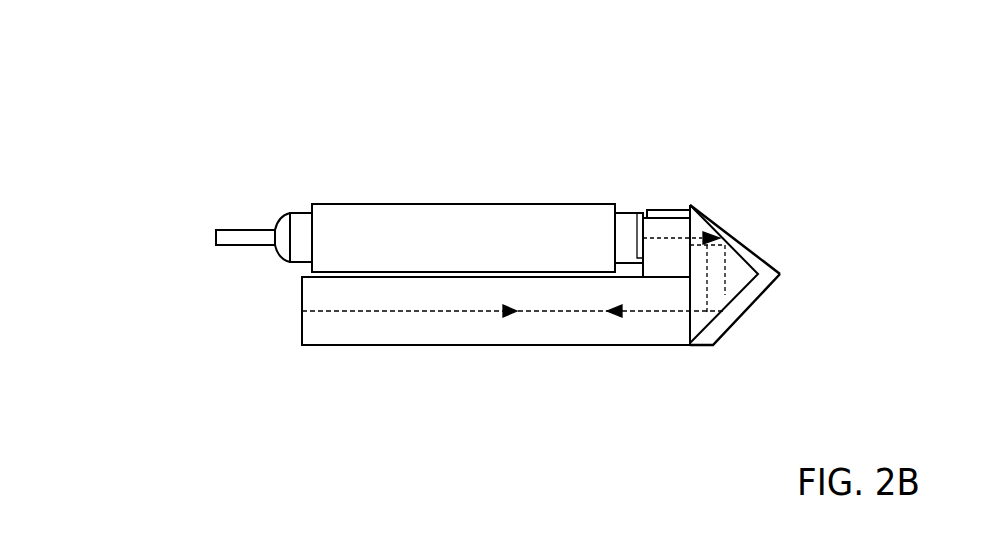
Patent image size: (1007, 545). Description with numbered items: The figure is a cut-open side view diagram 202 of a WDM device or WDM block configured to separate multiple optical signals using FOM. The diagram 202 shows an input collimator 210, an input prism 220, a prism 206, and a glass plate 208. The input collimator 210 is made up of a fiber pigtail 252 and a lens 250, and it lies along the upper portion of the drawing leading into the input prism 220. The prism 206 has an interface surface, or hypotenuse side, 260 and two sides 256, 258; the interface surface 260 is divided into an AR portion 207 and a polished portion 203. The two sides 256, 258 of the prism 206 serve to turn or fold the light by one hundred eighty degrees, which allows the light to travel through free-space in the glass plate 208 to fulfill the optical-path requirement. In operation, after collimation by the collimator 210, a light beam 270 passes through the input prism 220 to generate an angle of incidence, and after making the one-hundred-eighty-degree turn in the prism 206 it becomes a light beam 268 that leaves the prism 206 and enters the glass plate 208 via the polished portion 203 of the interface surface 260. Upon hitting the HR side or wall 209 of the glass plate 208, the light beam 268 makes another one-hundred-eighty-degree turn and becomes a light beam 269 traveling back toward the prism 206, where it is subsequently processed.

The side view diagram 202 is at (176, 45).
The fiber pigtail 252 is at (290, 214).
The input collimator 210 is at (496, 252).
The lens 250 is at (632, 212).
The light beam 270 is at (648, 212).
The input prism 220 is at (658, 213).
The interface surface 260 is at (683, 210).
The AR portion 207 is at (748, 243).
The side 256 is at (766, 244).
The side 258 is at (767, 290).
The prism 206 is at (755, 321).
The glass plate 208 is at (393, 345).
The HR side or wall 209 is at (300, 328).
The light beam 269 is at (527, 320).
The light beam 268 is at (607, 317).
The polished portion 203 is at (693, 347).